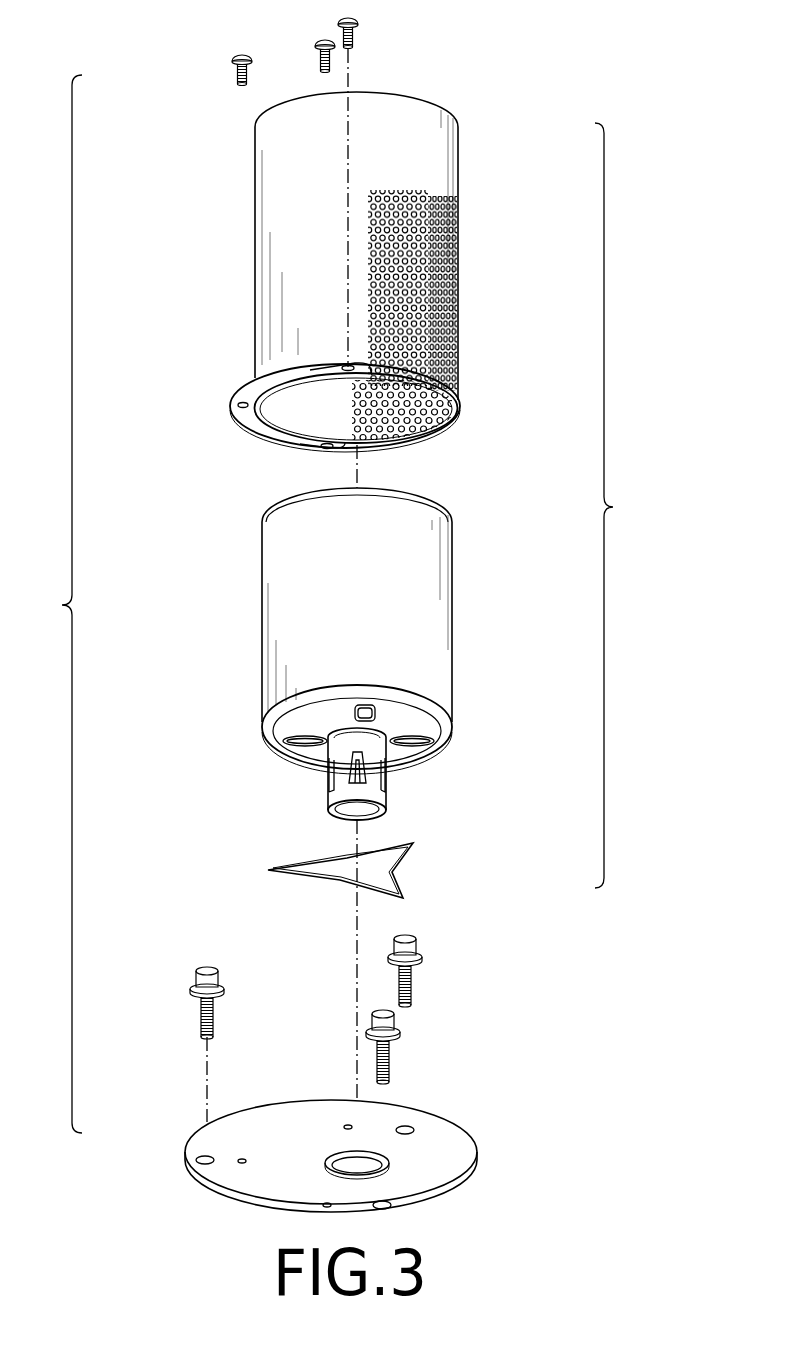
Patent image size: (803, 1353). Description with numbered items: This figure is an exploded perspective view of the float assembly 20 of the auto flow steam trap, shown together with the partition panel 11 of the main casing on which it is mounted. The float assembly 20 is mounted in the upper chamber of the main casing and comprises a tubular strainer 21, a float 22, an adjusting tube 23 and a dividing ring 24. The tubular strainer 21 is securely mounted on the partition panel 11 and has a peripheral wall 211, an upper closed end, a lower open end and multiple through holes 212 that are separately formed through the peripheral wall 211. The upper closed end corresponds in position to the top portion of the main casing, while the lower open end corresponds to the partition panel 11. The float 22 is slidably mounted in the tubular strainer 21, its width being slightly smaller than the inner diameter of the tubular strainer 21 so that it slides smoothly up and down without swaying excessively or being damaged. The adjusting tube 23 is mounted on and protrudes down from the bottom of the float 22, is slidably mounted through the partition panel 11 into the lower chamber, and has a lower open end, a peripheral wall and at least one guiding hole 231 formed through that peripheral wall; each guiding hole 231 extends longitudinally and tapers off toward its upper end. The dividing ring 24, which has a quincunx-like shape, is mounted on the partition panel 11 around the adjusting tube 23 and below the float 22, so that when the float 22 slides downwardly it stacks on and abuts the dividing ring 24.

The partition panel 11 is at (433, 1185).
The float assembly 20 is at (622, 505).
The tubular strainer 21 is at (343, 272).
The peripheral wall 211 is at (282, 250).
The through holes 212 is at (442, 277).
The float 22 is at (288, 612).
The adjusting tube 23 is at (335, 778).
The guiding hole 231 is at (350, 765).
The dividing ring 24 is at (403, 858).